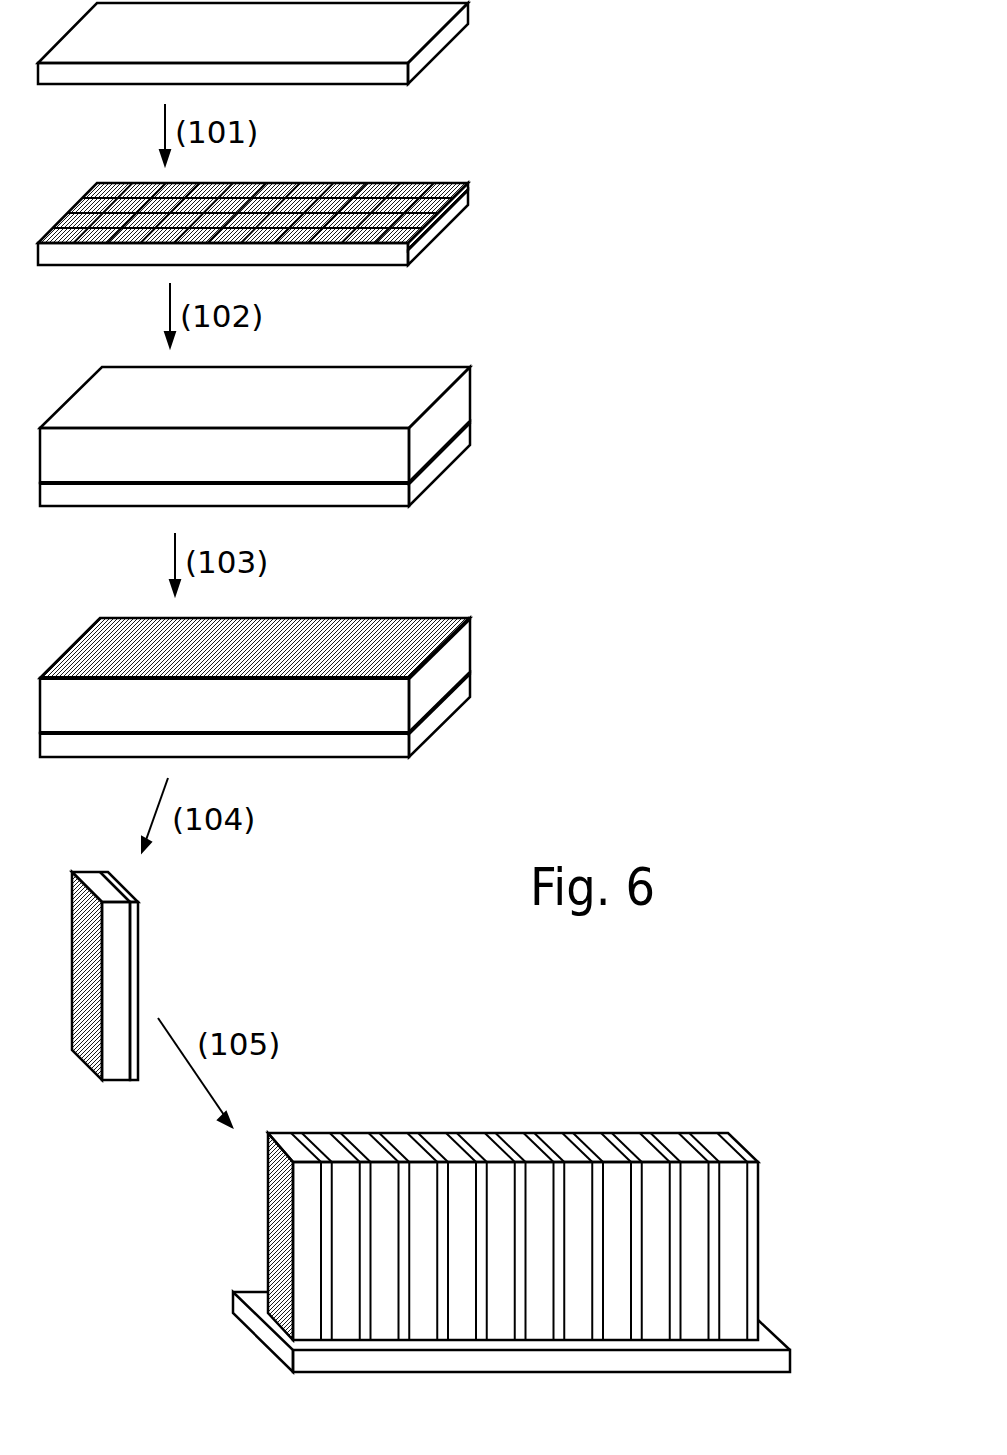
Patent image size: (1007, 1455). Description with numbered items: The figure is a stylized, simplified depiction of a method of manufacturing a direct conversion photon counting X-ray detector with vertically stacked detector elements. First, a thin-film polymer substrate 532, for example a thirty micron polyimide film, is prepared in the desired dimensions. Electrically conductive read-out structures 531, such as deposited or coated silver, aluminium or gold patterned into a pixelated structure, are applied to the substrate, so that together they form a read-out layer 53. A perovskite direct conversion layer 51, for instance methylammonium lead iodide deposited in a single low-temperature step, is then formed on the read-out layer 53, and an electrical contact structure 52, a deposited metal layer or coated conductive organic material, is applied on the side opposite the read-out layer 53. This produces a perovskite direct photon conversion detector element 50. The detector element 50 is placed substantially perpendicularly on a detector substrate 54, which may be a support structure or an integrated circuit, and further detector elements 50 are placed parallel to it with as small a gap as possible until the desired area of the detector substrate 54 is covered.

The perovskite direct photon conversion detector element 50 is at (160, 930).
The perovskite direct conversion layer 51 is at (447, 422).
The electrical contact structure 52 is at (403, 637).
The read-out layer 53 is at (334, 461).
The electrically conductive read-out structures 531 is at (427, 203).
The thin-film polymer substrate 532 is at (452, 37).
The detector substrate 54 is at (765, 1343).